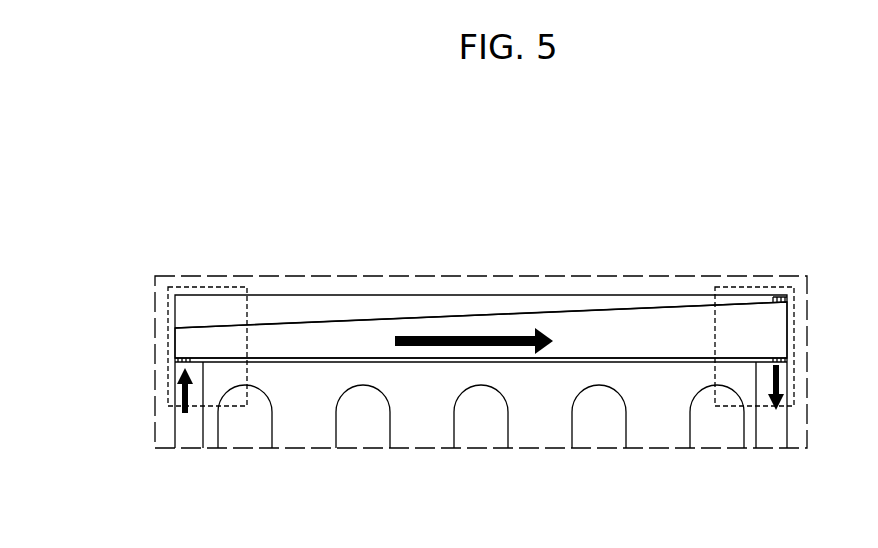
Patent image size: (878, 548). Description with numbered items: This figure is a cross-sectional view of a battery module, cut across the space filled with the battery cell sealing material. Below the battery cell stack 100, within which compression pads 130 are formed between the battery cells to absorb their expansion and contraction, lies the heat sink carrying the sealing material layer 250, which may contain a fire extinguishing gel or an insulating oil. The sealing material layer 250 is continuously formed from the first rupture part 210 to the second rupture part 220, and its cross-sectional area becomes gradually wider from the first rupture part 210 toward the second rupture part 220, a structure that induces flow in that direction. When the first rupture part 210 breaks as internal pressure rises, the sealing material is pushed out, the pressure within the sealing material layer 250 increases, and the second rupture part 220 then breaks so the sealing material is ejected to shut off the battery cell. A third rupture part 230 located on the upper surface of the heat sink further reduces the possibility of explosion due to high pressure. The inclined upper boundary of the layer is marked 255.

The battery cell stack 100 is at (657, 427).
The compression pad 130 is at (363, 427).
The first rupture part 210 is at (181, 360).
The second rupture part 220 is at (775, 357).
The third rupture part 230 is at (773, 300).
The sealing material layer 250 is at (651, 328).
The inclined guide surface 255 is at (352, 323).